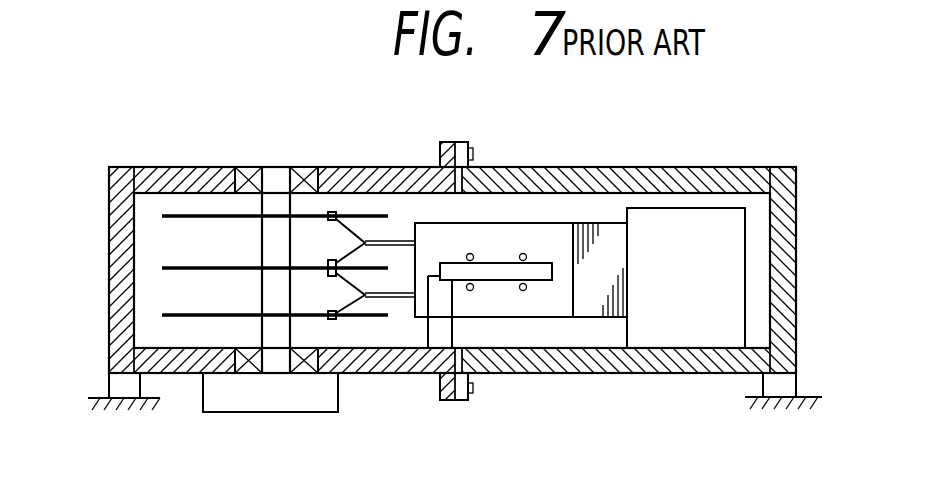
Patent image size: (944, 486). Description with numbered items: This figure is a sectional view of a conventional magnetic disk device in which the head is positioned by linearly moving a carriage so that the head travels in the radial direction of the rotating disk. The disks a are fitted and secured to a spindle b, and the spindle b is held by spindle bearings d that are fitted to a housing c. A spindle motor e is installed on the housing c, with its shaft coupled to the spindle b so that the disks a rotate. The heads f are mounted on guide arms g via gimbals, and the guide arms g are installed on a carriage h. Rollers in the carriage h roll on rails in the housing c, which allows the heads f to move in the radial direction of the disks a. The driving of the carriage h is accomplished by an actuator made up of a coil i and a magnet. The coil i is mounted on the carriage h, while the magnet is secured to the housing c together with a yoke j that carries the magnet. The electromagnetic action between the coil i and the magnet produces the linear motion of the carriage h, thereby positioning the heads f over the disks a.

The disk a is at (177, 213).
The spindle b is at (277, 175).
The housing c is at (109, 212).
The spindle bearing d is at (252, 170).
The spindle motor e is at (283, 397).
The head f is at (336, 212).
The guide arm g is at (394, 243).
The carriage h is at (520, 235).
The coil i is at (589, 307).
The yoke j is at (688, 325).